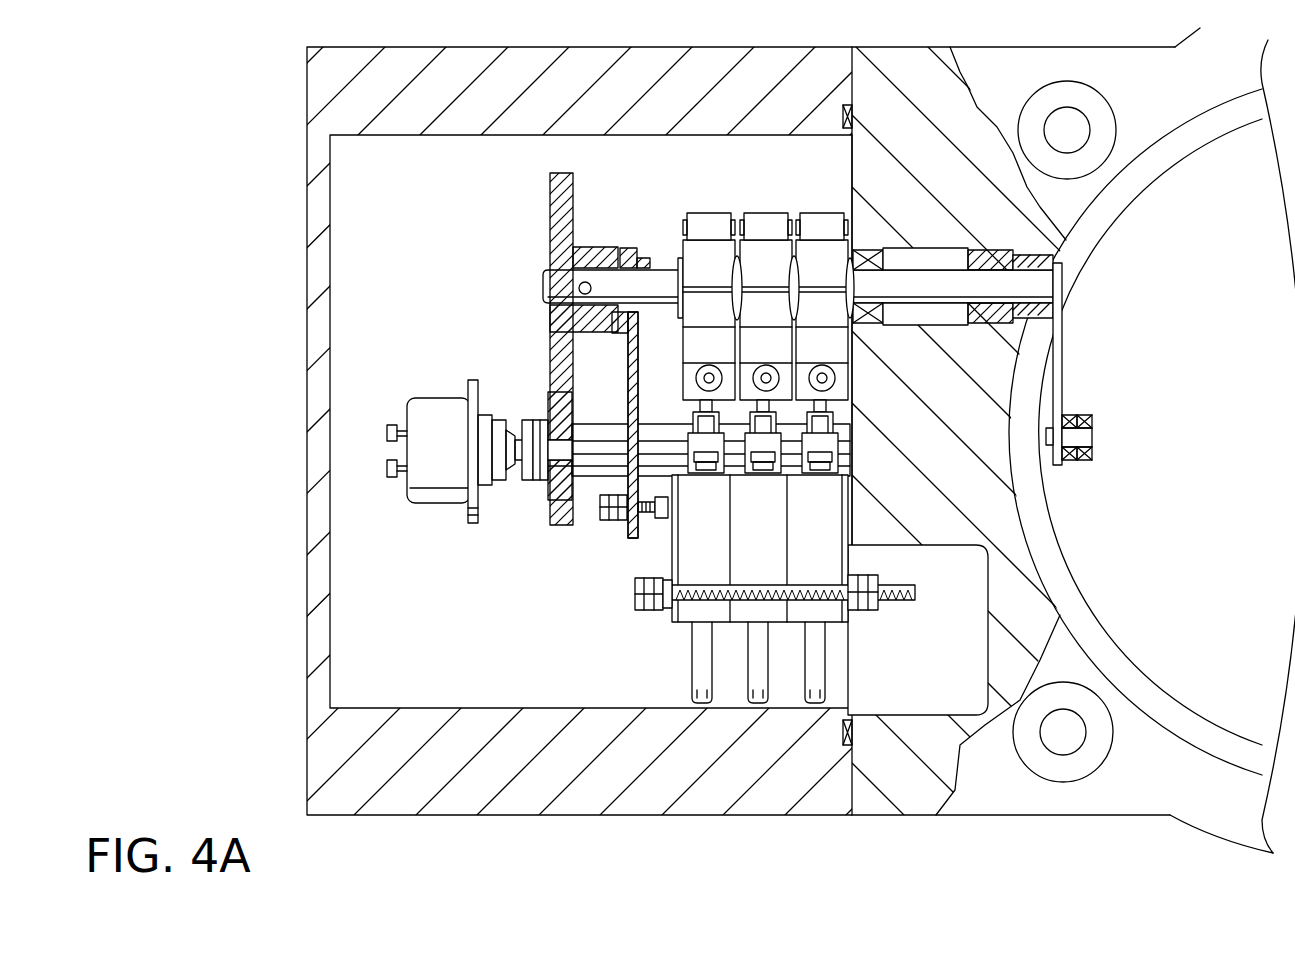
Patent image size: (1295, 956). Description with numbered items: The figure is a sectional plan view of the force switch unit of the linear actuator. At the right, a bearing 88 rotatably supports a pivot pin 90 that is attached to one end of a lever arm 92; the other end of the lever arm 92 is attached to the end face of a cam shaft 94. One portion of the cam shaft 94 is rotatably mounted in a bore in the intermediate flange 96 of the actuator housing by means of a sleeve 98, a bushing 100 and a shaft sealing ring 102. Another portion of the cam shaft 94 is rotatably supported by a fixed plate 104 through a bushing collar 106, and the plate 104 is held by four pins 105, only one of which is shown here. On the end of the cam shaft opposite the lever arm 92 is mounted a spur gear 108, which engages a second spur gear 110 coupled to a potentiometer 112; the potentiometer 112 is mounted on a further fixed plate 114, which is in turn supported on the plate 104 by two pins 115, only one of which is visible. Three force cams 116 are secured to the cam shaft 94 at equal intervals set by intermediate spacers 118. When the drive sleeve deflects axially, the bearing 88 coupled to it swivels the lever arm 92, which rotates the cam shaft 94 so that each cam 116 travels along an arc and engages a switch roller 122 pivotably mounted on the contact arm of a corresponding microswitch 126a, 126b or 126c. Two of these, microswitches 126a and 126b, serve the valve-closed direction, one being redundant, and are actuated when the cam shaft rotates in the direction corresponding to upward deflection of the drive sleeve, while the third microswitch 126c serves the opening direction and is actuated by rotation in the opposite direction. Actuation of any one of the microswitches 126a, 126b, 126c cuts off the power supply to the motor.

The bearing 88 is at (1086, 458).
The pivot pin 90 is at (1094, 435).
The lever arm 92 is at (1065, 370).
The cam shaft 94 is at (1032, 286).
The intermediate flange 96 is at (932, 65).
The sleeve 98 is at (1052, 335).
The bushing 100 is at (985, 255).
The shaft sealing ring 102 is at (860, 255).
The fixed plate 104 is at (630, 352).
The pin 105 is at (652, 520).
The bushing collar 106 is at (652, 260).
The spur gear 108 is at (550, 197).
The spur gear 110 is at (555, 500).
The potentiometer 112 is at (405, 413).
The fixed plate 114 is at (497, 380).
The pin 115 is at (668, 442).
The force cam 116 is at (706, 250).
The intermediate spacer 118 is at (737, 258).
The switch roller 122 is at (815, 433).
The microswitch 126a is at (820, 570).
The microswitch 126b is at (742, 622).
The microswitch 126c is at (700, 566).